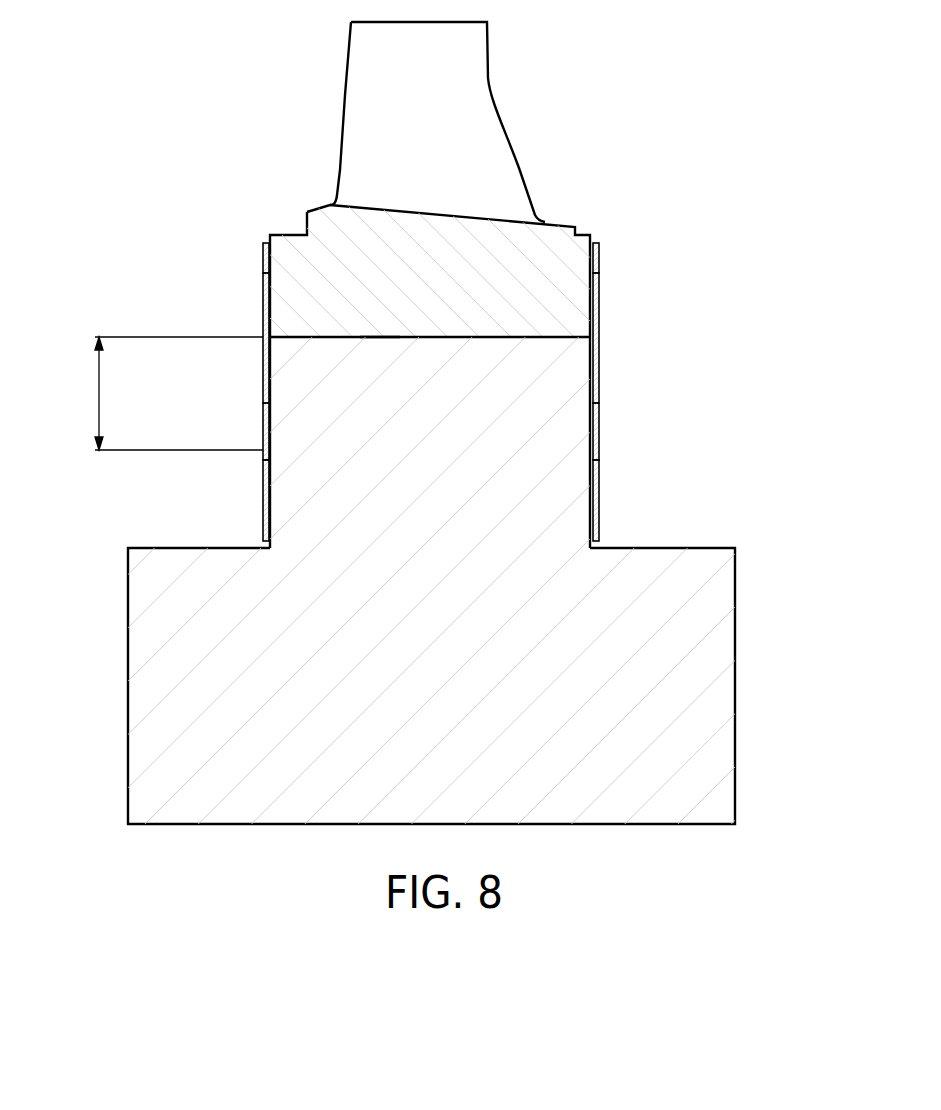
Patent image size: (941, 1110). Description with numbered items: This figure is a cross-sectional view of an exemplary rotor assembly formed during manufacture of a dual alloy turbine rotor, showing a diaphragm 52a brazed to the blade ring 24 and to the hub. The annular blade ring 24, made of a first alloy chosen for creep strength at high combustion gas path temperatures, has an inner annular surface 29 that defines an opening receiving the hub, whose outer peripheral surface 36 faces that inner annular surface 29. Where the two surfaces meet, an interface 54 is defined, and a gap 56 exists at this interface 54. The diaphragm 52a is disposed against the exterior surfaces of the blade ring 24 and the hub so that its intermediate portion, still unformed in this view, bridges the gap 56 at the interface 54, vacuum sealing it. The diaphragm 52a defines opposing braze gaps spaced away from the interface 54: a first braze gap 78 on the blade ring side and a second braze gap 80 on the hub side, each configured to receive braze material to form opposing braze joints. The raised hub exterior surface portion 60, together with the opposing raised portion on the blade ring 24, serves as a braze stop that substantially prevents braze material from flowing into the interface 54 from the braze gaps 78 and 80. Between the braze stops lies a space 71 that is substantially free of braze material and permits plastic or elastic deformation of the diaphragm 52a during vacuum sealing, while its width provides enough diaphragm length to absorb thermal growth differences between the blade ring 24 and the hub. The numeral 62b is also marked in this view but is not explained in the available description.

The annular blade ring 24 is at (530, 201).
The gap 56 is at (488, 337).
The inner annular surface 29 is at (415, 338).
The outer peripheral surface 36 is at (380, 338).
The interface 54 is at (601, 323).
The first braze gap 78 is at (263, 259).
The diaphragm 52a is at (263, 284).
The raised hub exterior surface portion 60 is at (263, 429).
The second braze gap 80 is at (263, 513).
The space 71 is at (174, 393).
The rotor disk 62b is at (807, 687).